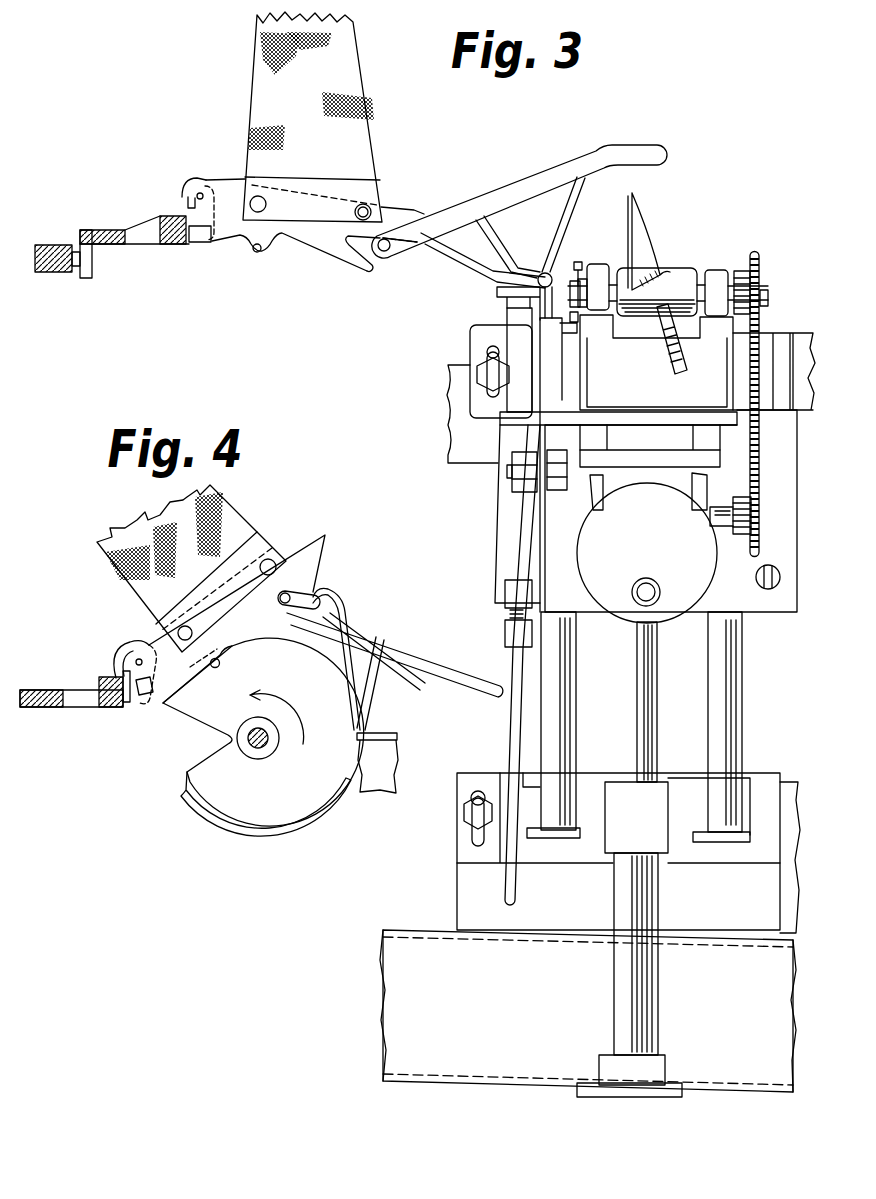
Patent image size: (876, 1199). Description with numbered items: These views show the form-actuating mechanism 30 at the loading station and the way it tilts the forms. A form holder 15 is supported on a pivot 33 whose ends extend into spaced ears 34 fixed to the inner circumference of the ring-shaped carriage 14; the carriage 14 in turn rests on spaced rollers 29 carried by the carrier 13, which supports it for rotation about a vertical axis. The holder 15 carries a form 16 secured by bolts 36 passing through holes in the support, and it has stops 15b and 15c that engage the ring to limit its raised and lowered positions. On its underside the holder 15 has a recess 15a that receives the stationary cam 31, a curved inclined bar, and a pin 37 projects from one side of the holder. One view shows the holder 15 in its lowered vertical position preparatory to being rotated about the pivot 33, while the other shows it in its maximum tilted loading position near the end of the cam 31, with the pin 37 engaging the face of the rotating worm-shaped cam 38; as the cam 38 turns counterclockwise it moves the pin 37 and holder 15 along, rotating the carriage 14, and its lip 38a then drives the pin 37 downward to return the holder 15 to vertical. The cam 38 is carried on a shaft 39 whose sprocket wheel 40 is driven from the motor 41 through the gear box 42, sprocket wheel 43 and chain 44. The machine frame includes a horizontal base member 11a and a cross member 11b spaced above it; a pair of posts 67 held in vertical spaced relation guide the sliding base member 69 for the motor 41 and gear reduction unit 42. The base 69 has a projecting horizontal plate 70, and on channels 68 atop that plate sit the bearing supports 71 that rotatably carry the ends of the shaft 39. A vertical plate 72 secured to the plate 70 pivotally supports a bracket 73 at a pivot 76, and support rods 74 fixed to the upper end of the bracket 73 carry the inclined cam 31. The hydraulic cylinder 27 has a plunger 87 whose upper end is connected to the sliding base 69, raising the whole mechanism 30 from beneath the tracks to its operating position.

In FIG. 3, the horizontal base member 11a is at (388, 1001).
In FIG. 3, the cross member 11b is at (466, 445).
In FIG. 3, the carrier 13 is at (52, 274).
In FIG. 3, the carriage 14 is at (170, 247).
In FIG. 4, the carriage 14 is at (37, 711).
In FIG. 3, the form holder 15 is at (268, 225).
In FIG. 4, the form holder 15 is at (206, 627).
In FIG. 3, the recess 15a is at (374, 264).
In FIG. 4, the recess 15a is at (313, 572).
In FIG. 3, the stop 15b is at (183, 192).
In FIG. 4, the stop 15b is at (115, 666).
In FIG. 3, the stop 15c is at (205, 245).
In FIG. 4, the stop 15c is at (148, 697).
In FIG. 3, the form 16 is at (358, 142).
In FIG. 4, the form 16 is at (262, 548).
In FIG. 3, the hydraulic cylinder 27 is at (628, 1006).
In FIG. 3, the rollers 29 is at (88, 279).
In FIG. 3, the form-actuating mechanism 30 is at (606, 645).
In FIG. 4, the form-actuating mechanism 30 is at (330, 732).
In FIG. 3, the stationary cam 31 is at (519, 216).
In FIG. 4, the stationary cam 31 is at (345, 628).
In FIG. 3, the pivot 33 is at (200, 192).
In FIG. 4, the pivot 33 is at (138, 658).
In FIG. 4, the ears 34 is at (138, 699).
In FIG. 3, the bolts 36 is at (359, 207).
In FIG. 4, the bolts 36 is at (227, 599).
In FIG. 3, the pin 37 is at (253, 252).
In FIG. 4, the pin 37 is at (215, 668).
In FIG. 3, the rotating cam 38 is at (639, 250).
In FIG. 4, the rotating cam 38 is at (215, 789).
In FIG. 3, the lip 38a is at (661, 344).
In FIG. 4, the lip 38a is at (302, 822).
In FIG. 3, the shaft 39 is at (700, 283).
In FIG. 3, the sprocket wheel 40 is at (745, 283).
In FIG. 3, the motor 41 is at (610, 600).
In FIG. 3, the gear box 42 is at (600, 482).
In FIG. 3, the sprocket wheel 43 is at (742, 509).
In FIG. 3, the chain 44 is at (763, 322).
In FIG. 3, the posts 67 is at (550, 699).
In FIG. 3, the channels 68 is at (592, 376).
In FIG. 3, the sliding base member 69 is at (773, 598).
In FIG. 3, the horizontal plate 70 is at (470, 414).
In FIG. 3, the bearing supports 71 is at (598, 272).
In FIG. 3, the vertical plate 72 is at (545, 440).
In FIG. 3, the bracket 73 is at (497, 293).
In FIG. 3, the support rods 74 is at (503, 246).
In FIG. 3, the pivot 76 is at (507, 471).
In FIG. 3, the plunger 87 is at (637, 731).